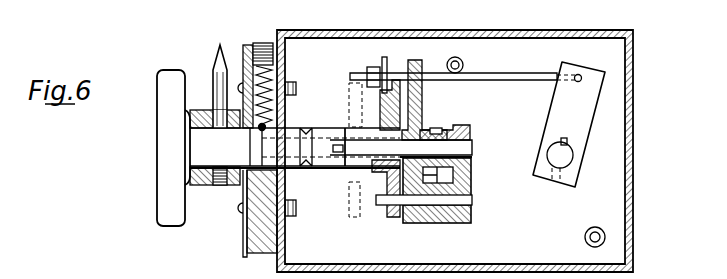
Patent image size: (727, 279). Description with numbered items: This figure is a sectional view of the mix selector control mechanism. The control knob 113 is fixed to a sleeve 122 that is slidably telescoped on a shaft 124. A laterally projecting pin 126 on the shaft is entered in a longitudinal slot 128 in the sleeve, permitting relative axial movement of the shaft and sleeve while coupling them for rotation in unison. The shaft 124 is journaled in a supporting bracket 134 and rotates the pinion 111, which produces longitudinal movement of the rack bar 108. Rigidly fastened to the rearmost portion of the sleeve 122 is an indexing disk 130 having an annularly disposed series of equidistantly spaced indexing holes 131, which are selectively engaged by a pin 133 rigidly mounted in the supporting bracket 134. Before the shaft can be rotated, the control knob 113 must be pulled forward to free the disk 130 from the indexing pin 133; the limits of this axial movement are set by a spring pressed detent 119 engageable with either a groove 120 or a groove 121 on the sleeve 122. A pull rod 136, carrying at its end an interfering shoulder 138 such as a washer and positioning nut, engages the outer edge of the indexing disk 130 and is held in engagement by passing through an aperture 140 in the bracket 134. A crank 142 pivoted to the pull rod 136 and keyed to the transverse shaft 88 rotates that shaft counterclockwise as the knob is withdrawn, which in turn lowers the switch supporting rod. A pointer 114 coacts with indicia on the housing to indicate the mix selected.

The transverse shaft 88 is at (568, 157).
The rack bar 108 is at (445, 178).
The pinion 111 is at (430, 127).
The control knob 113 is at (171, 73).
The pointer 114 is at (220, 46).
The spring pressed detent 119 is at (266, 125).
The groove 120 is at (284, 186).
The groove 121 is at (308, 168).
The sleeve 122 is at (338, 169).
The shaft 124 is at (472, 148).
The pin 126 is at (338, 144).
The longitudinal slot 128 is at (366, 140).
The indexing disk 130 is at (391, 218).
The indexing holes 131 is at (388, 108).
The indexing pin 133 is at (377, 201).
The supporting bracket 134 is at (452, 208).
The pull rod 136 is at (528, 73).
The interfering shoulder 138 is at (390, 57).
The aperture 140 is at (422, 92).
The crank 142 is at (557, 111).